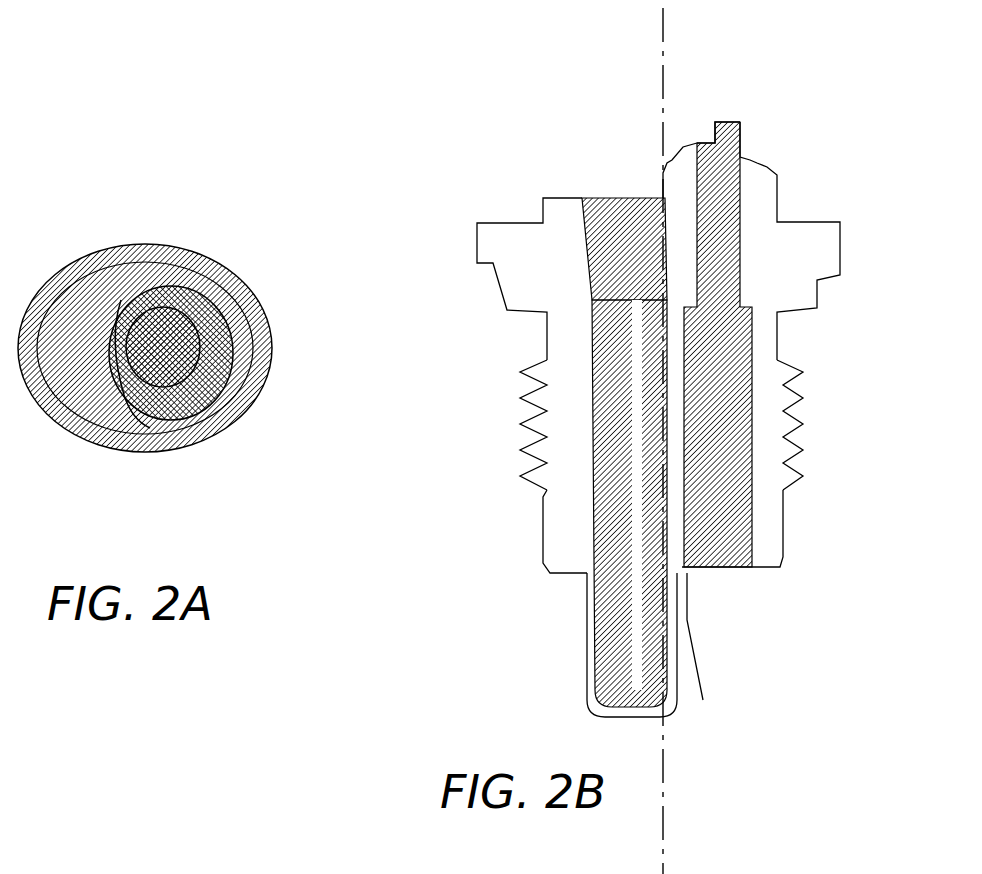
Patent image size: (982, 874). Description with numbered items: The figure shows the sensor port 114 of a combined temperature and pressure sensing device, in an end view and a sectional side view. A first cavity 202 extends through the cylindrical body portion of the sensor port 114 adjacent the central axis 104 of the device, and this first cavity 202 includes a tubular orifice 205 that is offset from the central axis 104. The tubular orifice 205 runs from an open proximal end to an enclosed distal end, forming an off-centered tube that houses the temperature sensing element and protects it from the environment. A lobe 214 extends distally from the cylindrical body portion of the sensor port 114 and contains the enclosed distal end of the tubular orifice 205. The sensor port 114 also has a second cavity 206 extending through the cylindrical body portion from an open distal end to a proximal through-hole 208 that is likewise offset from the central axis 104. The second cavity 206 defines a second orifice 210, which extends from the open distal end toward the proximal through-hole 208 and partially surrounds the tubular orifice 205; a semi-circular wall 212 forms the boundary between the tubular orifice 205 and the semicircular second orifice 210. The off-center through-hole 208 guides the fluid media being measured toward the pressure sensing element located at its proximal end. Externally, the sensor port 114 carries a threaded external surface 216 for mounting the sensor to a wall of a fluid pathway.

In FIG. 2B, the central axis 104 is at (668, 30).
In FIG. 2A, the sensor port 114 is at (145, 303).
In FIG. 2B, the sensor port 114 is at (622, 407).
In FIG. 2B, the first cavity 202 is at (603, 183).
In FIG. 2B, the tubular orifice 205 is at (597, 660).
In FIG. 2B, the second cavity 206 is at (725, 577).
In FIG. 2B, the proximal through-hole 208 is at (712, 120).
In FIG. 2A, the second orifice 210 is at (127, 450).
In FIG. 2B, the second orifice 210 is at (722, 393).
In FIG. 2B, the semi-circular wall 212 is at (688, 620).
In FIG. 2B, the lobe 214 is at (603, 707).
In FIG. 2B, the threaded external surface 216 is at (507, 452).